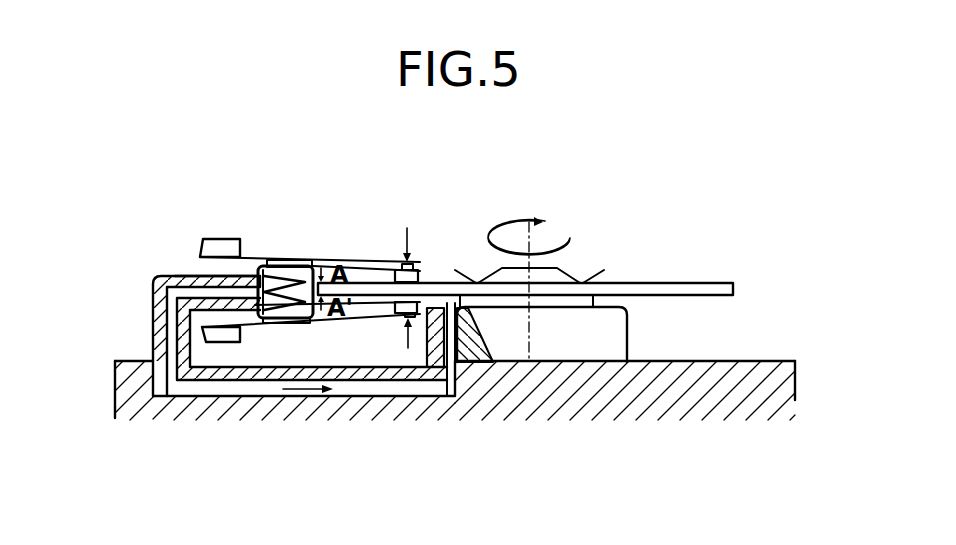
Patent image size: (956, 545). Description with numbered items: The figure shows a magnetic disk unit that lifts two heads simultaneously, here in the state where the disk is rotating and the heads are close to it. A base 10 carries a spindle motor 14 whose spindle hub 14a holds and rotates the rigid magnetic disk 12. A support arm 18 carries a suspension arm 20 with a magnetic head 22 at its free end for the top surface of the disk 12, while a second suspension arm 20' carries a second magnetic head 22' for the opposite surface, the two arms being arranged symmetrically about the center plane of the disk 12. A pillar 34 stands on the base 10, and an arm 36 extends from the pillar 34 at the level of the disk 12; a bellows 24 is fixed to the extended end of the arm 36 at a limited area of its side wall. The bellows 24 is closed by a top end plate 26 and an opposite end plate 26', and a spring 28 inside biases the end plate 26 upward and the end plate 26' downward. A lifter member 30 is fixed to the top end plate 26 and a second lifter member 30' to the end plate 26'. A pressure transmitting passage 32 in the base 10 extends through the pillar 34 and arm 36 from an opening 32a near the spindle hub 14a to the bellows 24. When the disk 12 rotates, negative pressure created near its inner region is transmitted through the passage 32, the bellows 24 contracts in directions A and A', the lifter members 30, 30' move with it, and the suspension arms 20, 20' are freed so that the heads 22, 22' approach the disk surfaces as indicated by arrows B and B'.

The base 10 is at (748, 368).
The magnetic disk 12 is at (703, 283).
The spindle motor 14 is at (543, 278).
The spindle hub 14a is at (573, 308).
The support arm 18 is at (205, 242).
The suspension arm 20 is at (310, 232).
The second suspension arm 20' is at (312, 402).
The magnetic head 22 is at (454, 223).
The second magnetic head 22' is at (434, 402).
The bellows 24 is at (260, 273).
The top end plate 26 is at (285, 234).
The opposite end plate 26' is at (304, 410).
The spring 28 is at (278, 266).
The lifter member 30 is at (315, 208).
The second lifter member 30' is at (195, 415).
The pressure transmitting passage 32 is at (257, 384).
The opening 32a is at (478, 340).
The pillar 34 is at (152, 297).
The arm 36 is at (190, 277).